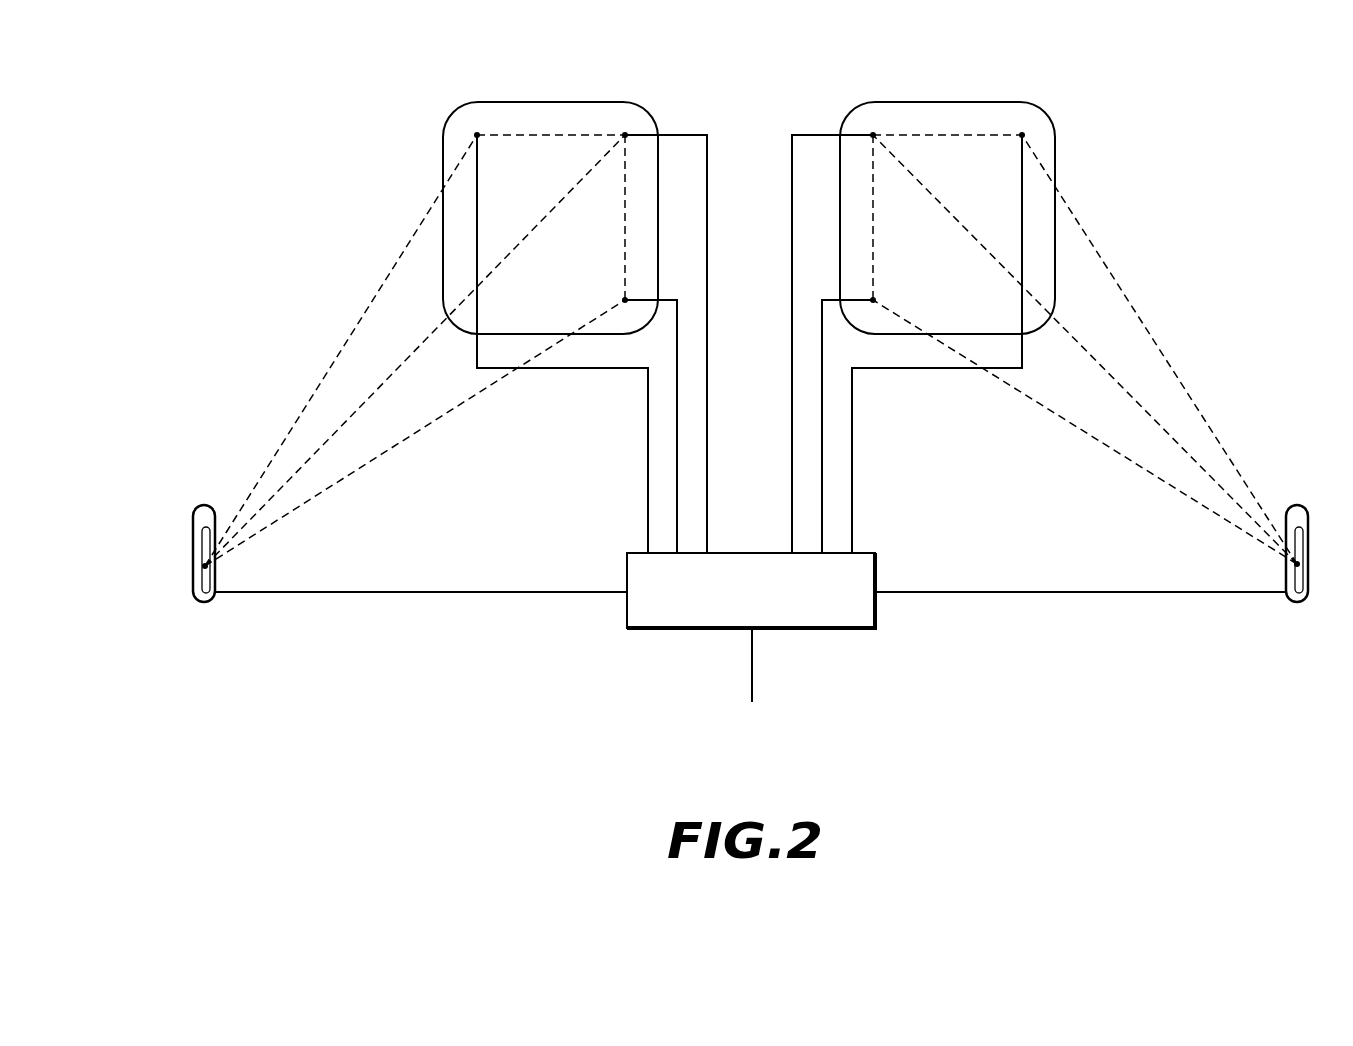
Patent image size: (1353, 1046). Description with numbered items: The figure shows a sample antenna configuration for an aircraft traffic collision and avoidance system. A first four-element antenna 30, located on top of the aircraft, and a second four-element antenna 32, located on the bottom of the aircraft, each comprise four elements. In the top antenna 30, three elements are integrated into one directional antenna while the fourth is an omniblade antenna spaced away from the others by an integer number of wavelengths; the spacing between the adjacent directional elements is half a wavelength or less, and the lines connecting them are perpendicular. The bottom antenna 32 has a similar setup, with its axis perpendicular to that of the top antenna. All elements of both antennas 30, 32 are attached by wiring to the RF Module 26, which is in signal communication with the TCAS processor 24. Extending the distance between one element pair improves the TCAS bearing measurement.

The first four-element antenna 30 is at (428, 104).
The second four-element antenna 32 is at (1071, 104).
The RF Module 26 is at (850, 630).
The TCAS processor 24 is at (750, 694).